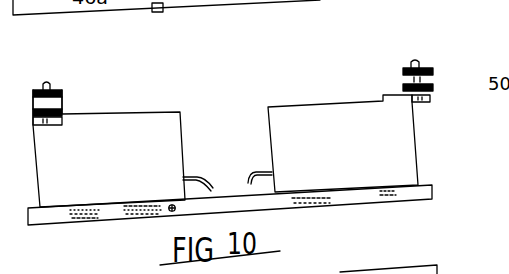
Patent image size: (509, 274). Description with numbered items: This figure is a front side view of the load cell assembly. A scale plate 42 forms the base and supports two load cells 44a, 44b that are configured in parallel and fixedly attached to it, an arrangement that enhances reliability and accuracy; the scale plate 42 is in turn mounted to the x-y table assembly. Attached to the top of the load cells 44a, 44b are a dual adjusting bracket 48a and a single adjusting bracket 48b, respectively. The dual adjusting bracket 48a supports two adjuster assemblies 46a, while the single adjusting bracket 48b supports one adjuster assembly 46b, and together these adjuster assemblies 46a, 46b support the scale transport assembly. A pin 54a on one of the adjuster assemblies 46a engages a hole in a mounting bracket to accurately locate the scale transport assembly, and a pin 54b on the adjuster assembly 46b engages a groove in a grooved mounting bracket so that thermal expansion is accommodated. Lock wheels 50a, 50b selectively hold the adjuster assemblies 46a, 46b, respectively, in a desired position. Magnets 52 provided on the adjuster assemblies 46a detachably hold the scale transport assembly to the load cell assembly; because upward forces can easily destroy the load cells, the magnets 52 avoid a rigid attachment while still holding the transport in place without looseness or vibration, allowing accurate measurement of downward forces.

The scale plate 42 is at (433, 198).
The load cell 44a is at (163, 177).
The load cell 44b is at (400, 150).
The adjuster assembly 46a is at (60, 89).
The adjuster assembly 46b is at (403, 72).
The dual adjusting bracket 48a is at (60, 121).
The single adjusting bracket 48b is at (380, 92).
The lock wheel 50a is at (65, 109).
The lock wheel 50b is at (437, 86).
The magnet 52 is at (65, 100).
The pin 54a is at (40, 87).
The pin 54b is at (422, 60).